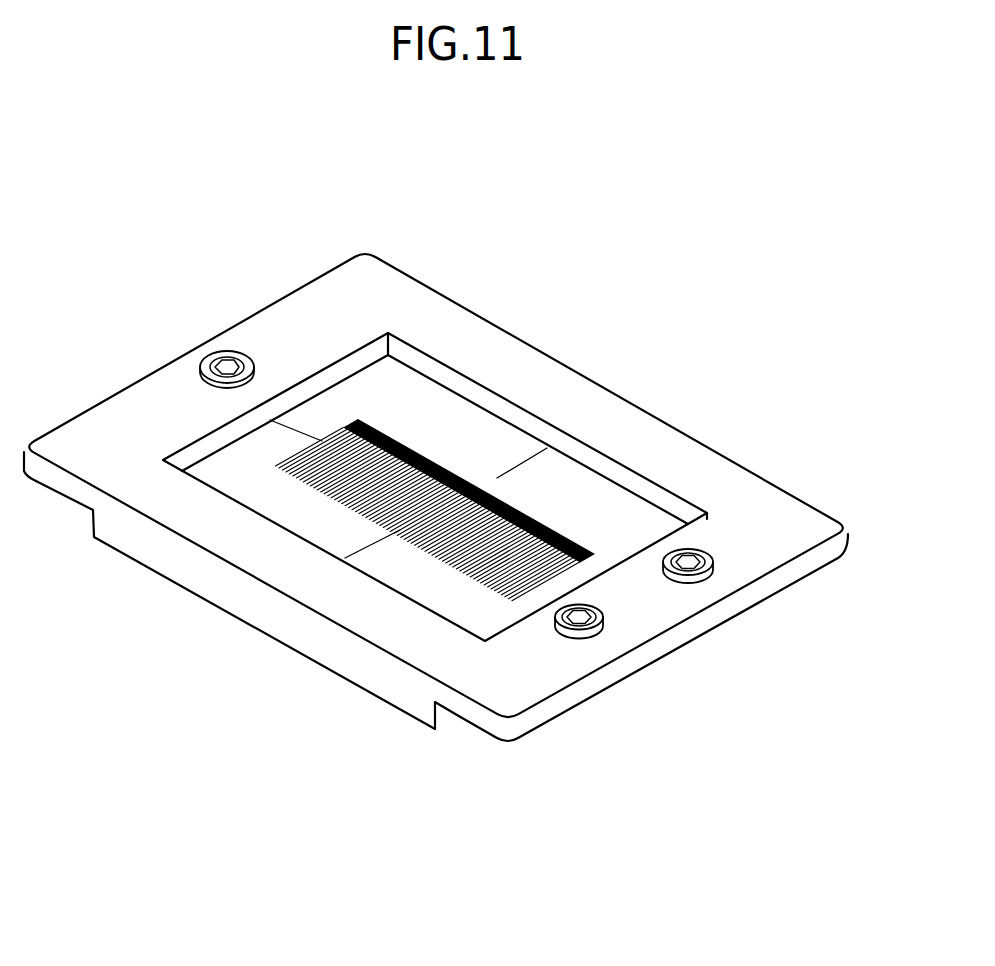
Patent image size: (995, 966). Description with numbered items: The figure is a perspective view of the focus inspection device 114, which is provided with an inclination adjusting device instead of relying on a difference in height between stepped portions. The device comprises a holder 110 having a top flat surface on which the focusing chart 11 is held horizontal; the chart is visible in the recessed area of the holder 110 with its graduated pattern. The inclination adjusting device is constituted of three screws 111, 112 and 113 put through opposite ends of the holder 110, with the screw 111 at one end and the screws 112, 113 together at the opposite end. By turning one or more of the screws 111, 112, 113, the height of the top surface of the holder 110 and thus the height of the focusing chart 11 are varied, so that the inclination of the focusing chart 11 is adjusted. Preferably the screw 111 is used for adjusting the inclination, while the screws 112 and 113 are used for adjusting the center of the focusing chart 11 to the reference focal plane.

The focusing chart 11 is at (402, 415).
The holder 110 is at (436, 433).
The screw 111 is at (213, 363).
The screw 112 is at (582, 627).
The screw 113 is at (697, 577).
The focus inspection device 114 is at (615, 380).